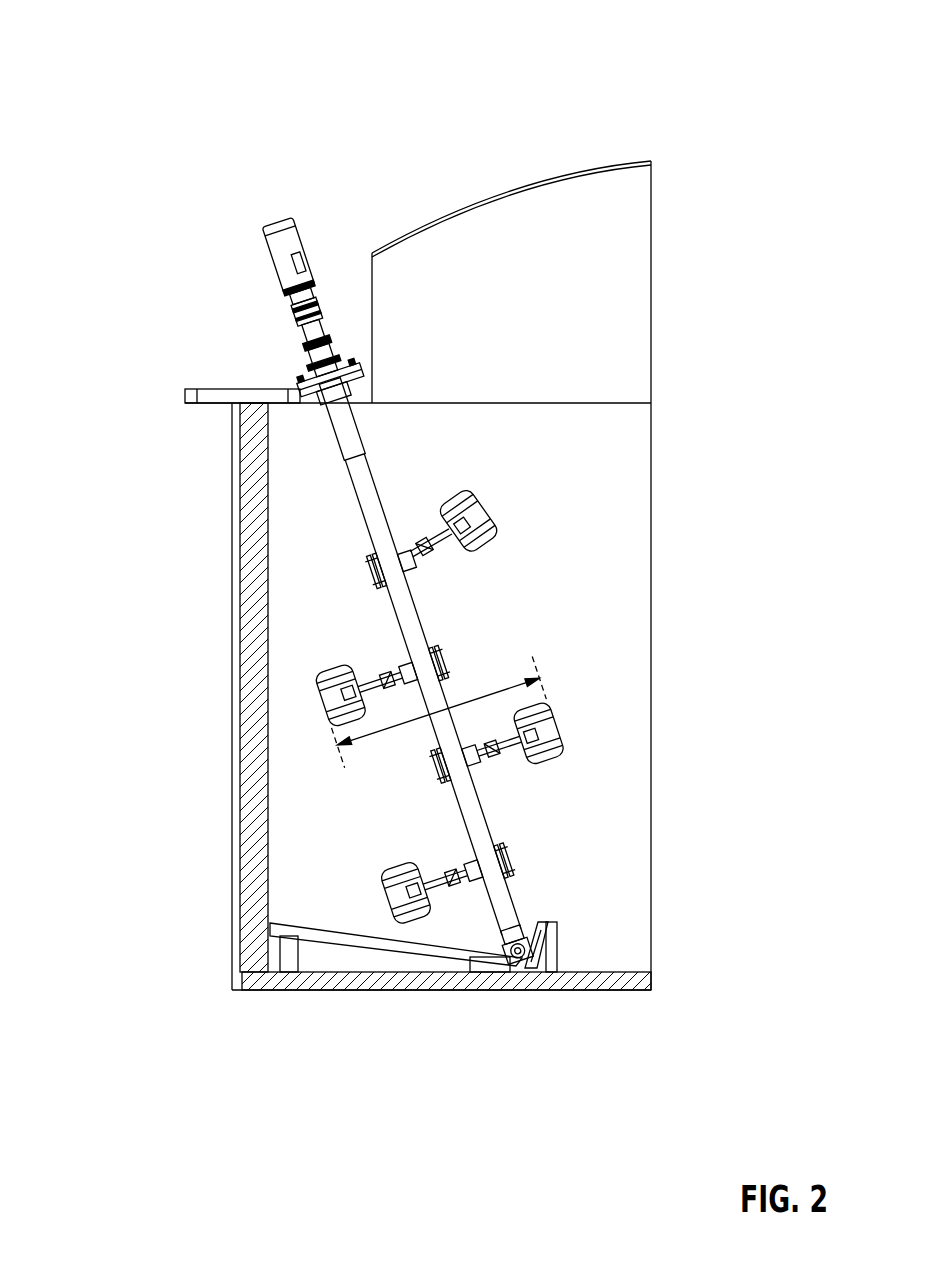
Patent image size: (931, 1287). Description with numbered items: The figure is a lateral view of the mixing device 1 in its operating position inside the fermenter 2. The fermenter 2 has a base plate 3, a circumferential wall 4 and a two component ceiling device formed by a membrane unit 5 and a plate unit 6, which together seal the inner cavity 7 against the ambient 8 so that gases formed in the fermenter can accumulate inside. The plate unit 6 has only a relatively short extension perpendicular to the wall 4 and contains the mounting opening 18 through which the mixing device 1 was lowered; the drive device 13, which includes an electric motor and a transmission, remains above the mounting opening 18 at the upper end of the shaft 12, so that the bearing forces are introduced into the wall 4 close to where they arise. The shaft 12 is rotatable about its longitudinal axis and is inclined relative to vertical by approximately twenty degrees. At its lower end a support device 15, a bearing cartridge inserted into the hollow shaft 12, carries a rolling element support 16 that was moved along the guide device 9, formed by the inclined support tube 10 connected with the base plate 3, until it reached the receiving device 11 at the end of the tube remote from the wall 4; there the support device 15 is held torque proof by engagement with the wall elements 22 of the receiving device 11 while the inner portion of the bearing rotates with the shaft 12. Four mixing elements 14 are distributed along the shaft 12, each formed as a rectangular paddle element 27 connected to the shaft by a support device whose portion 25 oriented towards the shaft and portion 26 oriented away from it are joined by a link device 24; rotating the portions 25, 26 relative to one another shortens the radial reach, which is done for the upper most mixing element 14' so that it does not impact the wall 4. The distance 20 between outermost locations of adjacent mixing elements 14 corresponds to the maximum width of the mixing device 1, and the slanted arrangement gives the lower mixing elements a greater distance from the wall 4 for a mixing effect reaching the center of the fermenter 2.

The mixing device 1 is at (363, 634).
The fermenter 2 is at (501, 203).
The base plate 3 is at (405, 985).
The circumferential wall 4 is at (252, 698).
The membrane unit 5 is at (543, 195).
The plate unit 6 is at (275, 398).
The inner cavity 7 is at (370, 808).
The ambient 8 is at (290, 161).
The guide device 9 is at (314, 900).
The support tube 10 is at (343, 942).
The receiving device 11 is at (575, 955).
The shaft 12 is at (408, 606).
The drive device 13 is at (372, 257).
The mixing element 14 is at (643, 742).
The upper most mixing element 14' is at (567, 519).
The support device 15 is at (668, 888).
The rolling element support 16 is at (518, 951).
The mounting opening 18 is at (365, 386).
The distance 20 is at (492, 692).
The wall element 22 is at (500, 965).
The link device 24 is at (485, 750).
The portion oriented towards the shaft 25 is at (412, 558).
The portion oriented away from the shaft 26 is at (447, 546).
The paddle element 27 is at (488, 528).